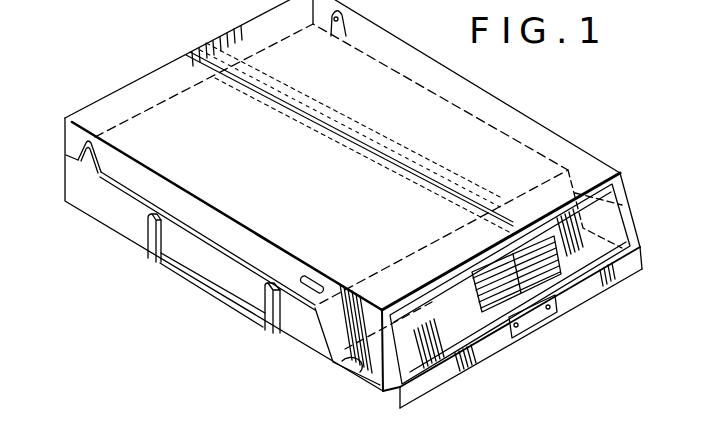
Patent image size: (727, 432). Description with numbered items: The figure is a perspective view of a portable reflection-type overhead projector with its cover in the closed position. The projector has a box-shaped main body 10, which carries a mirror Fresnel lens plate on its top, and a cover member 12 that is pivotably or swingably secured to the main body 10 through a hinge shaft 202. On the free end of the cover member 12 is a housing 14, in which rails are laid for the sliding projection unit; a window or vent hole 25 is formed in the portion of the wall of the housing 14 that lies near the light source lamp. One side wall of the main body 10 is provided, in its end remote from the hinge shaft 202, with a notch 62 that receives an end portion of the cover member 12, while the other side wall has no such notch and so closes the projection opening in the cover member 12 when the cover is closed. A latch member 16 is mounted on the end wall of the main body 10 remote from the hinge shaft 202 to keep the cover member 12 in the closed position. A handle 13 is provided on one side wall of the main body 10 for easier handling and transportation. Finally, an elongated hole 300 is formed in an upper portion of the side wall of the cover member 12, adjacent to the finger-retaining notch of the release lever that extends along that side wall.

The main body 10 is at (100, 212).
The cover member 12 is at (592, 163).
The handle 13 is at (243, 312).
The housing 14 is at (387, 358).
The latch member 16 is at (533, 318).
The vent hole 25 is at (547, 268).
The notch 62 is at (356, 372).
The hinge shaft 202 is at (82, 134).
The elongated hole 300 is at (313, 280).